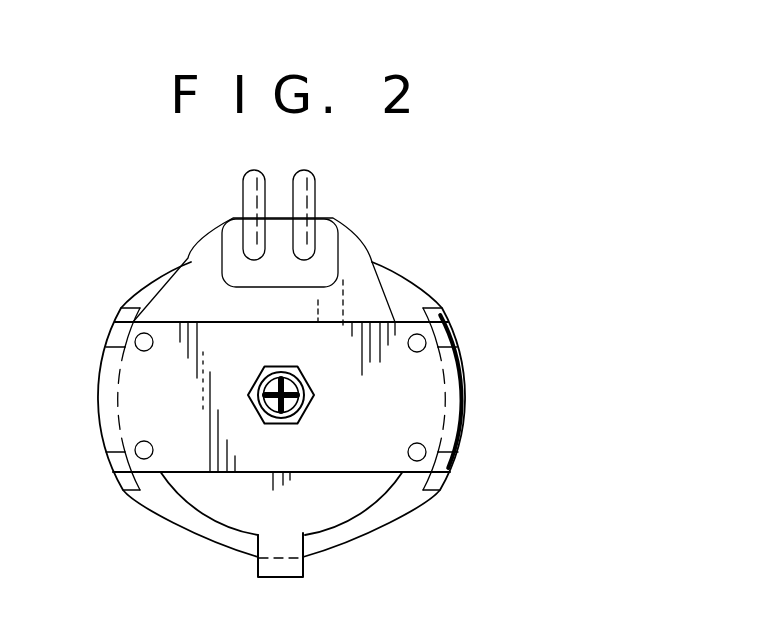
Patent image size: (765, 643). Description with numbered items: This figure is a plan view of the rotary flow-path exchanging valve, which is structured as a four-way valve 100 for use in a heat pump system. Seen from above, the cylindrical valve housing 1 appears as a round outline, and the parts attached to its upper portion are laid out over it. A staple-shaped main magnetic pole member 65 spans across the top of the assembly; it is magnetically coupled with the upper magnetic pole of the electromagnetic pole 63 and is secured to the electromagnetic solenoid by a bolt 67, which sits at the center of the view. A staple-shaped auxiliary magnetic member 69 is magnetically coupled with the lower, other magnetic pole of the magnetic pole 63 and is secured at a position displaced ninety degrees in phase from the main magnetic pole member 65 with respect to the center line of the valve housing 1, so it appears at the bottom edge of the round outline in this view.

The valve housing 1 is at (393, 272).
The four-way valve 100 is at (483, 385).
The magnetic pole 63 is at (220, 495).
The main magnetic pole member 65 is at (362, 474).
The bolt 67 is at (258, 382).
The auxiliary magnetic member 69 is at (307, 547).